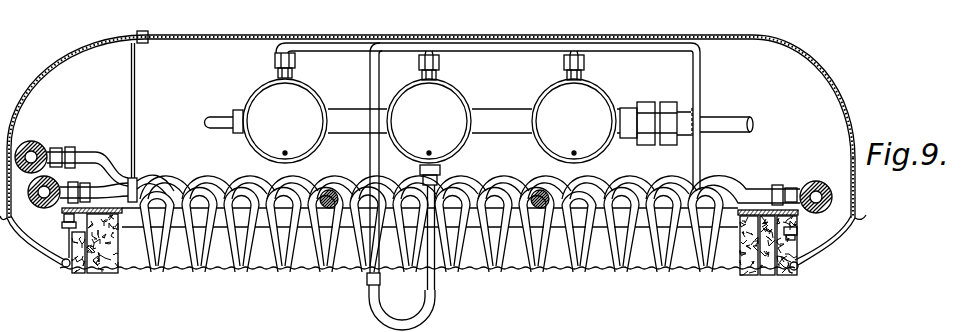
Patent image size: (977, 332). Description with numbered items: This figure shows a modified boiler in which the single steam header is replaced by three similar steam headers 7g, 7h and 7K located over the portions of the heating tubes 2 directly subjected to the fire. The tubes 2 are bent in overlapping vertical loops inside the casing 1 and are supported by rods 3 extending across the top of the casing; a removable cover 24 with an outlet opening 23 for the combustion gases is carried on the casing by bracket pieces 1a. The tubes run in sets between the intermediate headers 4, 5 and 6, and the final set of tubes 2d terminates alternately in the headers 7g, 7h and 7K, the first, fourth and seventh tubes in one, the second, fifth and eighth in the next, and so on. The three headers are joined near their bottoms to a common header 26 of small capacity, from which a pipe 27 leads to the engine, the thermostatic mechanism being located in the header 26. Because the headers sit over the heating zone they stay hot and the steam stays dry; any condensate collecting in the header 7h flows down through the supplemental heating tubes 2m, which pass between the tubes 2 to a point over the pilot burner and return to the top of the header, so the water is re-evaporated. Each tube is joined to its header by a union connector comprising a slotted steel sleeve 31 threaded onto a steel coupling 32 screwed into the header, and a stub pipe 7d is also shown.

The casing 1 is at (67, 273).
The bracket pieces 1a is at (45, 250).
The tubes 2 is at (233, 258).
The fourth set of tubes 2d is at (702, 93).
The supplemental heating tubes 2m is at (369, 143).
The rods 3 is at (325, 189).
The header 4 is at (31, 141).
The header 5 is at (818, 180).
The header 6 is at (31, 205).
The pipe stub 7d is at (222, 117).
The header 7K is at (322, 100).
The header 7h is at (462, 98).
The header 7g is at (613, 94).
The outlet opening 23 is at (195, 40).
The cover 24 is at (851, 132).
The common header 26 is at (505, 131).
The pipe 27 is at (733, 123).
The sleeve 31 is at (273, 62).
The coupling 32 is at (292, 72).